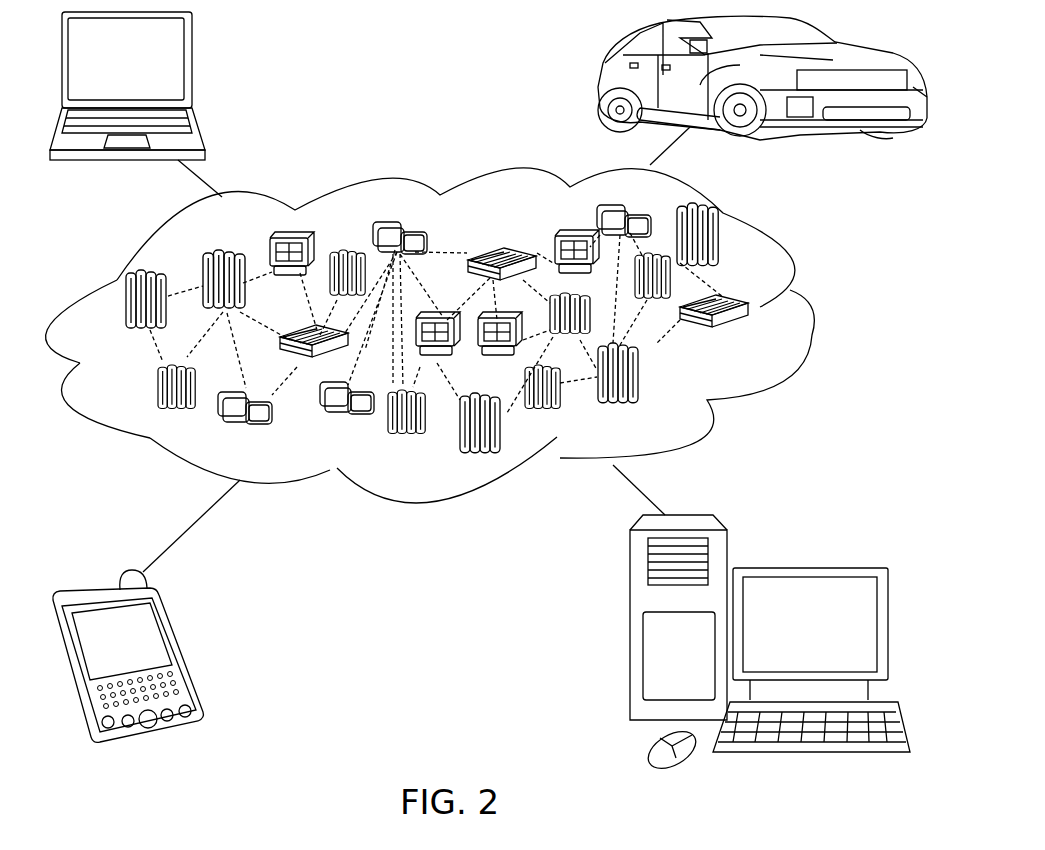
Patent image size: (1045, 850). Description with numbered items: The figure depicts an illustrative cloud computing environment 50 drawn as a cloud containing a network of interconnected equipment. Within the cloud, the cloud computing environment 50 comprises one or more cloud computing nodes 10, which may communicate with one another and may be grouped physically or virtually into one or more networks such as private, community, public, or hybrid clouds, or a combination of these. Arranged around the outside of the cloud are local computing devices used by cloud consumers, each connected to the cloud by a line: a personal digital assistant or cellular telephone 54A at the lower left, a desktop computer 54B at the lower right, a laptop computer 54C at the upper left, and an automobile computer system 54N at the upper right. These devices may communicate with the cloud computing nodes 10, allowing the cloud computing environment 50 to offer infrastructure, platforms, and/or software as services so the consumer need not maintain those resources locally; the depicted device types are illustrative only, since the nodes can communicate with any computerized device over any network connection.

The cloud computing nodes 10 is at (765, 341).
The cloud computing environment 50 is at (805, 308).
The personal digital assistant or cellular telephone 54A is at (183, 648).
The desktop computer 54B is at (808, 565).
The laptop computer 54C is at (195, 67).
The automobile computer system 54N is at (600, 80).